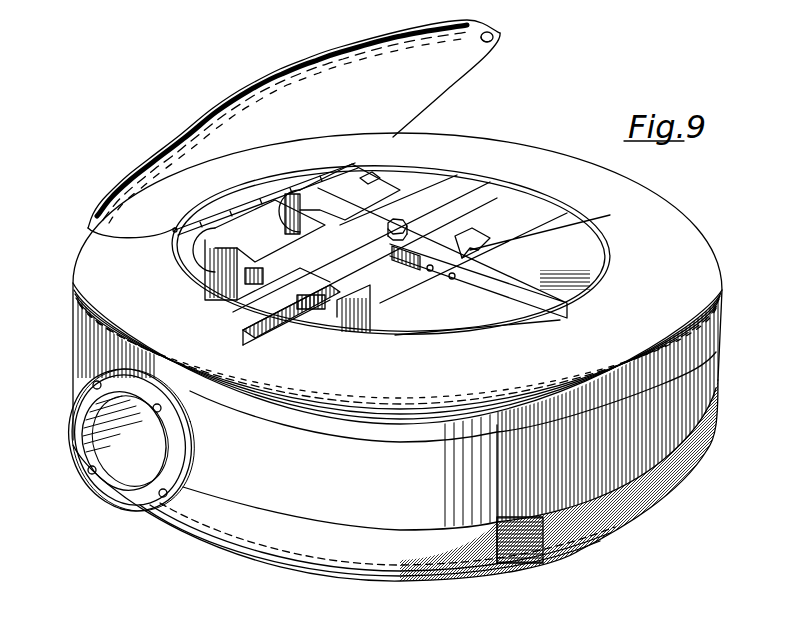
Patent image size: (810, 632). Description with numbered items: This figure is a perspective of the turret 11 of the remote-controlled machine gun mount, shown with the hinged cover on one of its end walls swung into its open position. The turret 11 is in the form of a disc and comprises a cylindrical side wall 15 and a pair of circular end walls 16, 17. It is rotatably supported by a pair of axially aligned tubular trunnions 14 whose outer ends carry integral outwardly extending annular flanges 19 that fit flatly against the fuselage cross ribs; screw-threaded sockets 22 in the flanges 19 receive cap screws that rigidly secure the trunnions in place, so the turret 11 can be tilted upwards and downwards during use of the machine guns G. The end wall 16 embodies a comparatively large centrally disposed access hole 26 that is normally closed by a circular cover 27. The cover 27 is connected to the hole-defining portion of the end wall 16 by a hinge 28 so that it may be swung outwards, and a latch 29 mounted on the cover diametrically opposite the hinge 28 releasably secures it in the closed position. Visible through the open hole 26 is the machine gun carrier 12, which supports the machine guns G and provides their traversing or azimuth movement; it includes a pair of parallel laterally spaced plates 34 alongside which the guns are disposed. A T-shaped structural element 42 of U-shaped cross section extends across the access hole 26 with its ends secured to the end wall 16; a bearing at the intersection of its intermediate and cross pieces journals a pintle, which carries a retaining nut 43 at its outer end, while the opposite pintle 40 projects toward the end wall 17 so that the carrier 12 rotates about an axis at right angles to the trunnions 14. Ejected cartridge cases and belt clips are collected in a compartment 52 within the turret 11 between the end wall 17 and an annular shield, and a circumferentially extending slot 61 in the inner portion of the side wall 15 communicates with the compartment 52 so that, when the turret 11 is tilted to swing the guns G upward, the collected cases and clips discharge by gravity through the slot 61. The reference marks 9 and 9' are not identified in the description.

The turret 11 is at (641, 189).
The cylindrical side wall 15 is at (717, 336).
The end wall 16 is at (522, 158).
The end wall 17 is at (425, 582).
The access hole 26 is at (548, 193).
The circular cover 27 is at (478, 62).
The latch 29 is at (495, 36).
The pintle 40 is at (282, 111).
The hinge 28 is at (209, 224).
The retaining nut 43 is at (394, 221).
The T-shaped structural element 42 is at (438, 208).
The plates 34 is at (462, 228).
The machine gun carrier 12 is at (478, 242).
The machine guns G is at (178, 247).
The jaw block 9 is at (368, 265).
The jaw block 9' is at (291, 314).
The annular flanges 19 is at (88, 460).
The tubular trunnions 14 is at (120, 478).
The screw-threaded sockets 22 is at (93, 386).
The circumferentially extending slot 61 is at (685, 440).
The compartment 52 is at (560, 510).